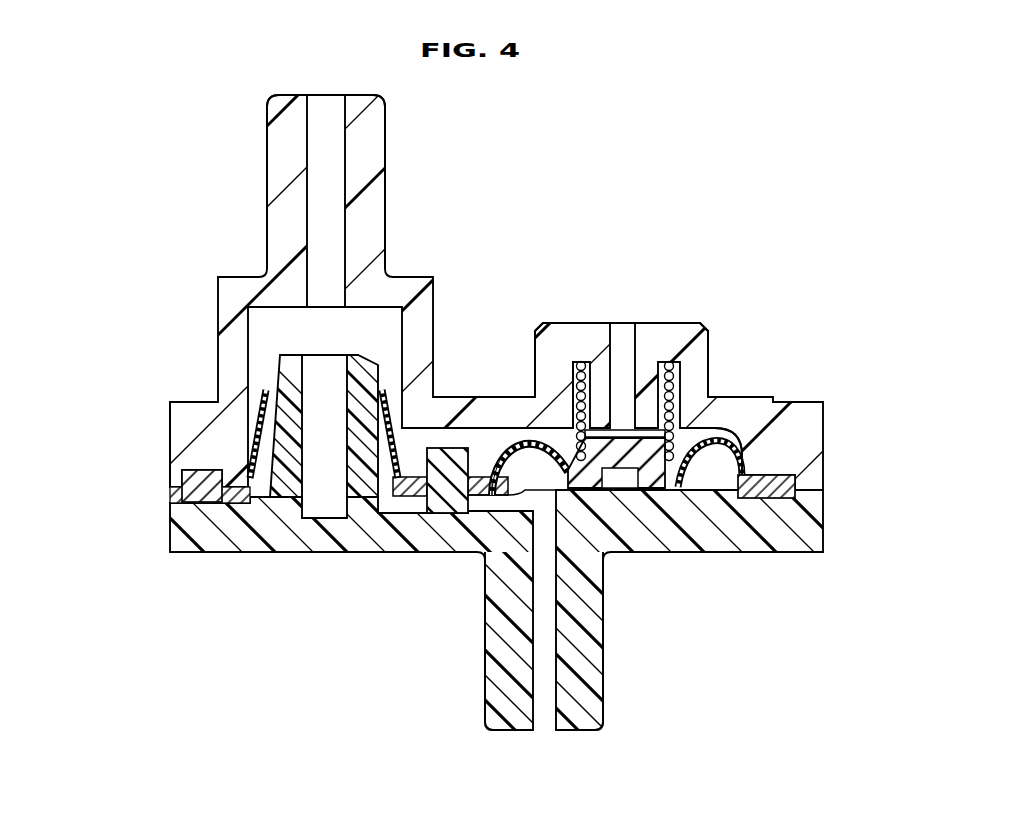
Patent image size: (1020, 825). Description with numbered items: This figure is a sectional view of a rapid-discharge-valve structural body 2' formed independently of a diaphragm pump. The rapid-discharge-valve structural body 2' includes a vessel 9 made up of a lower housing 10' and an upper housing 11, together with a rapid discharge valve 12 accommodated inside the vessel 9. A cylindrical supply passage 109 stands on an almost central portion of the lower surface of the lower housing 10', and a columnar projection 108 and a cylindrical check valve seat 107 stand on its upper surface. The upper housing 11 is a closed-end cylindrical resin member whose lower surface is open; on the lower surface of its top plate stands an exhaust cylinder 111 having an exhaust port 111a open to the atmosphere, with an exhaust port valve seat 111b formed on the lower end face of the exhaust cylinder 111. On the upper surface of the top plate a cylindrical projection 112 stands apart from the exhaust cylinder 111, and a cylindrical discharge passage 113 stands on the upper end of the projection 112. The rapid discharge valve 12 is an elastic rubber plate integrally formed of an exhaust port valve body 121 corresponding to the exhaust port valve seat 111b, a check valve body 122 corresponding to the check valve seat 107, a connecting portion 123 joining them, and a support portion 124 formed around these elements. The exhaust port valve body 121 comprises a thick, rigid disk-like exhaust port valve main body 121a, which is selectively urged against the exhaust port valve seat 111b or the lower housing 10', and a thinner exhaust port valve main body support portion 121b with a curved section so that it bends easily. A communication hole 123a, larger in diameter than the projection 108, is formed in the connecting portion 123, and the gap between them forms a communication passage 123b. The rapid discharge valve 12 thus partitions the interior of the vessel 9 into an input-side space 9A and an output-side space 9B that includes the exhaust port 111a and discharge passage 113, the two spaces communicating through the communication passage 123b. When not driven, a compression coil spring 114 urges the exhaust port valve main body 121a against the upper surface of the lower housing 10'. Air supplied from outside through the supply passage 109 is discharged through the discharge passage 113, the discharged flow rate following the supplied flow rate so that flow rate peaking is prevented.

The rapid-discharge-valve structural body 2' is at (46, 446).
The vessel 9 is at (125, 443).
The input-side space 9A is at (716, 466).
The output-side space 9B is at (696, 440).
The lower housing 10' is at (510, 412).
The upper housing 11 is at (170, 490).
The rapid discharge valve 12 is at (170, 432).
The check valve seat 107 is at (258, 332).
The projection 108 is at (440, 448).
The supply passage 109 is at (603, 610).
The exhaust cylinder 111 is at (675, 324).
The exhaust port 111a is at (640, 430).
The exhaust port valve seat 111b is at (567, 420).
The projection 112 is at (218, 289).
The discharge passage 113 is at (385, 190).
The compression coil spring 114 is at (547, 430).
The exhaust port valve body 121 is at (751, 383).
The exhaust port valve main body 121a is at (705, 448).
The exhaust port valve main body support portion 121b is at (760, 475).
The check valve body 122 is at (262, 372).
The connecting portion 123 is at (507, 400).
The communication hole 123a is at (487, 475).
The communication passage 123b is at (503, 452).
The support portion 124 is at (200, 470).